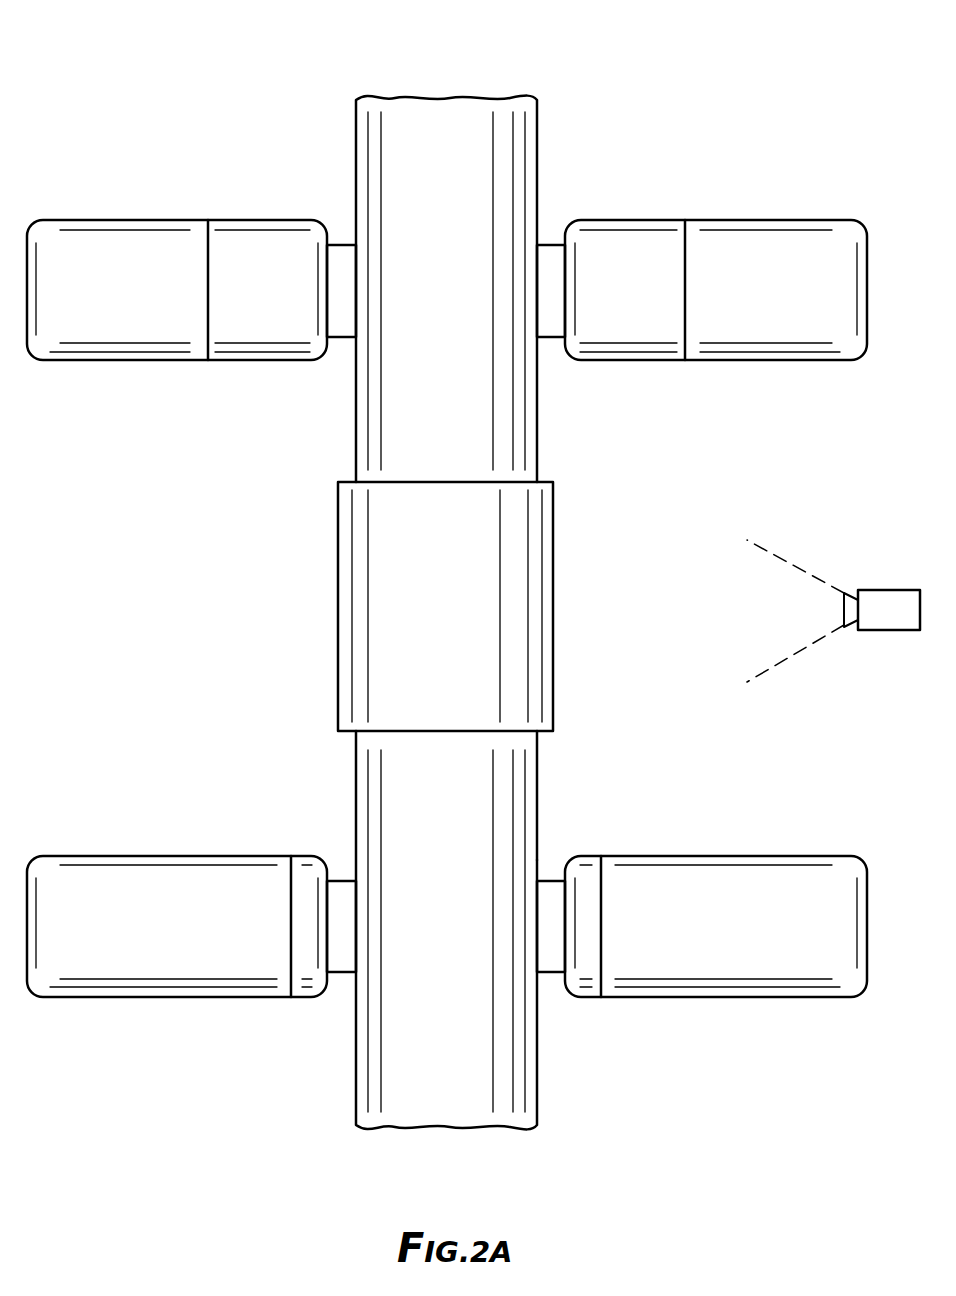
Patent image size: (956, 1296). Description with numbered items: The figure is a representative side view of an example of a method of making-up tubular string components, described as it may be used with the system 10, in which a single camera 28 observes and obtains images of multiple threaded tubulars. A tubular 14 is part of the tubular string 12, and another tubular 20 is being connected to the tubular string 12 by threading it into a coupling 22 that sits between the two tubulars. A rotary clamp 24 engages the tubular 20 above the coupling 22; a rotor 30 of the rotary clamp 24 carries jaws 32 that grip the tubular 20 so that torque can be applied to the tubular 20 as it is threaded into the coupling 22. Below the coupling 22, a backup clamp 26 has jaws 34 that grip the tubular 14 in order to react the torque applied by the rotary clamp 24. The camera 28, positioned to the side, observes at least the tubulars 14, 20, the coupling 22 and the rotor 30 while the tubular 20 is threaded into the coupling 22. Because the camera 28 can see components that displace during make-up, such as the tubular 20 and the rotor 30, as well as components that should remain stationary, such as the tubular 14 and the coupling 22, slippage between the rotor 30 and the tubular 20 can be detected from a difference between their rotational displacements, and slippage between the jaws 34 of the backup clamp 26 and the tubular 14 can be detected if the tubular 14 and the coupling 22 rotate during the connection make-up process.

The system 10 is at (723, 96).
The tubular string 12 is at (356, 1032).
The tubular 14 is at (537, 808).
The tubular 20 is at (356, 130).
The coupling 22 is at (338, 598).
The rotary clamp 24 is at (793, 220).
The backup clamp 26 is at (134, 856).
The camera 28 is at (891, 590).
The rotor 30 is at (258, 361).
The jaws 32 is at (553, 338).
The jaws 34 is at (552, 973).